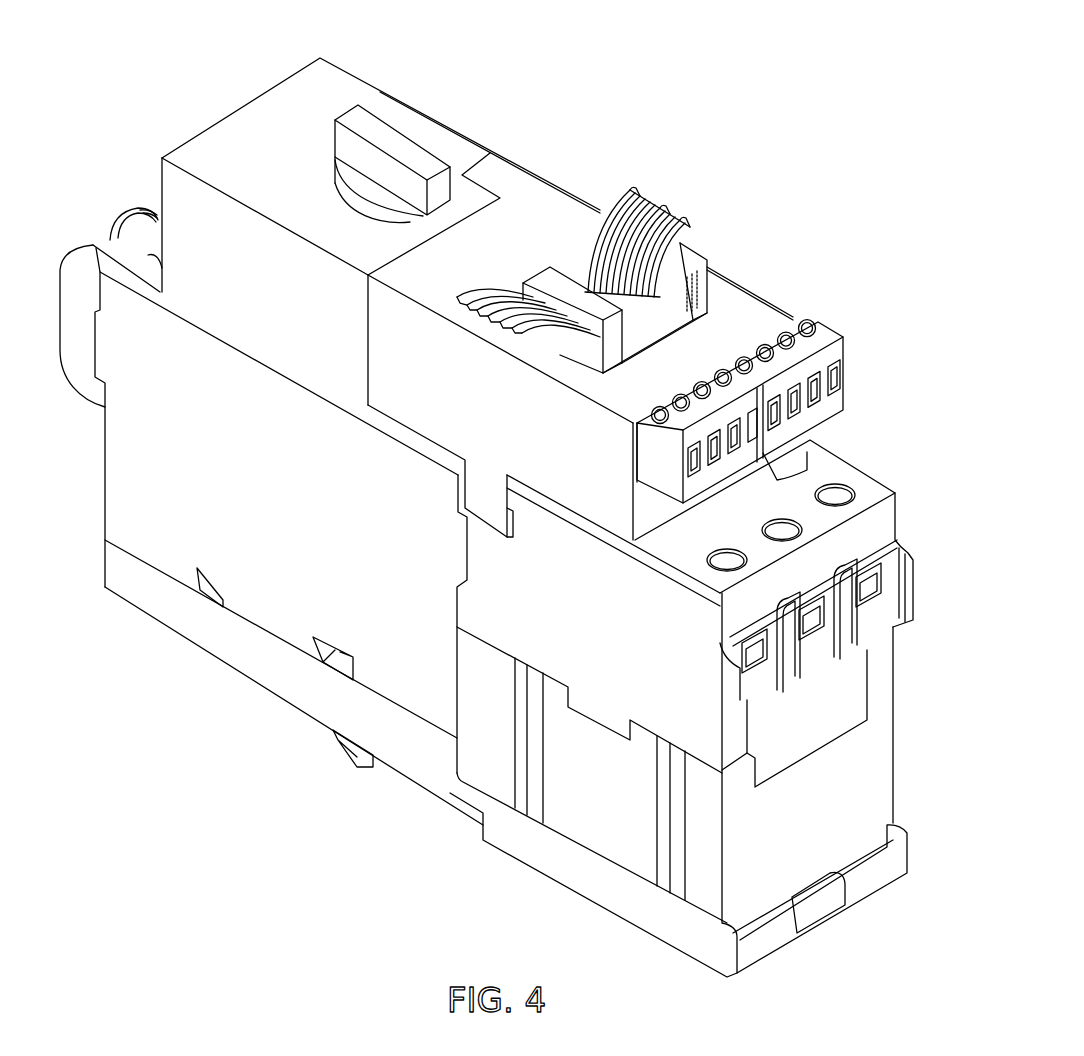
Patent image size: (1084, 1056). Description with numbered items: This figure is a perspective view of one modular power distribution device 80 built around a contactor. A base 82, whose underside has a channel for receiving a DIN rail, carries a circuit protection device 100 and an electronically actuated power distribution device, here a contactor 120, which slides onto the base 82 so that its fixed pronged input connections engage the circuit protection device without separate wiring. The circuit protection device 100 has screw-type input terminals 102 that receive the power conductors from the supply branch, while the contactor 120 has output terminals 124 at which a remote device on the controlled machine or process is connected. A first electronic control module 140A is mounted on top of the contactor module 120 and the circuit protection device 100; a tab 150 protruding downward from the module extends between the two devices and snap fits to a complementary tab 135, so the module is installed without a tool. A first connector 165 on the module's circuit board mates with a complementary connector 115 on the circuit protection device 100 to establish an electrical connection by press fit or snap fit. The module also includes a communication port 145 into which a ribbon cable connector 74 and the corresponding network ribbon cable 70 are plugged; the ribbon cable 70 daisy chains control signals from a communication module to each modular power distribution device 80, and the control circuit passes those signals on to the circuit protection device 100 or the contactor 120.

The modular power distribution device 80 is at (653, 93).
The ribbon cable 70 is at (580, 242).
The ribbon cable connector 74 is at (533, 277).
The base 82 is at (213, 635).
The circuit protection device 100 is at (105, 480).
The input terminals 102 is at (143, 253).
The complementary connector 115 is at (497, 147).
The contactor 120 is at (583, 823).
The output terminals 124 is at (857, 487).
The complementary tab 135 is at (517, 523).
The first electronic control module 140A is at (543, 207).
The communication port 145 is at (633, 357).
The tab 150 is at (488, 505).
The first connector 165 is at (525, 165).